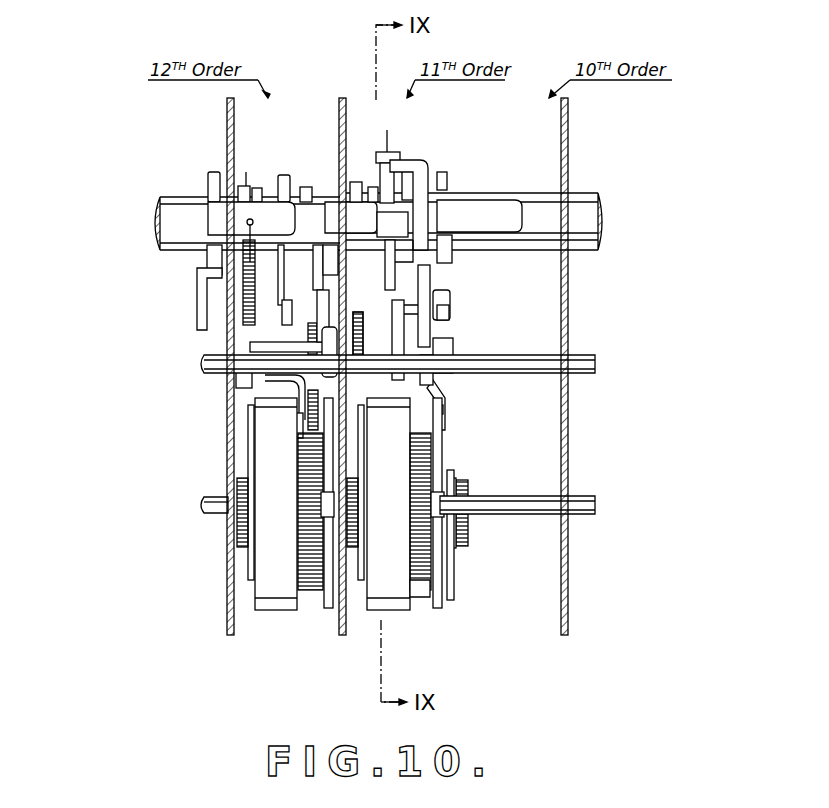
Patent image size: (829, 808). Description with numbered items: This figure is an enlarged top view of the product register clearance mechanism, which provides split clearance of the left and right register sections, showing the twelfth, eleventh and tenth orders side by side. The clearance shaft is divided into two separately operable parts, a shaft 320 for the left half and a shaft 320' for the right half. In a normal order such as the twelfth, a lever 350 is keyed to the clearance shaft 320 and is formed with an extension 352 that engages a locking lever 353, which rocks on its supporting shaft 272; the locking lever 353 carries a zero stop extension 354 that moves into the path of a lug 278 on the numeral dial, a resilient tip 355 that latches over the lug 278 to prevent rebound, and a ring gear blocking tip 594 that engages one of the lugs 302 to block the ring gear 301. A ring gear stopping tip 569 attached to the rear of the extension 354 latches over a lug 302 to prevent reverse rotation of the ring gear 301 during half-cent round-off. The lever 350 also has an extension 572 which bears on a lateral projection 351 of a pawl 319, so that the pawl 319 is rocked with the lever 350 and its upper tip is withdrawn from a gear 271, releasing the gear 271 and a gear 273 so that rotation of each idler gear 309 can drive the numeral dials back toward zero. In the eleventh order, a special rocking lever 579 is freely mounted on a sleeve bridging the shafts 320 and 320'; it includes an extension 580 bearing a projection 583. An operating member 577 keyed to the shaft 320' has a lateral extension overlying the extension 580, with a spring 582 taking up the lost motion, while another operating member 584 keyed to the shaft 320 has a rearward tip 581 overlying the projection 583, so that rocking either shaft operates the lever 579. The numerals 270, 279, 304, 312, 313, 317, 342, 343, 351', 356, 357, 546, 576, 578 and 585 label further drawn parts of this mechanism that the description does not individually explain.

The shaft 270 is at (200, 505).
The gear 271 is at (300, 341).
The supporting shaft 272 is at (596, 363).
The gear 273 is at (420, 612).
The lug 278 is at (297, 432).
The numeral wheel 279 is at (282, 612).
The ring gear 301 is at (445, 578).
The lug 302 is at (330, 612).
The block 304 is at (446, 556).
The idler gear 309 is at (462, 546).
The pinion 312 is at (340, 438).
The member 313 is at (322, 397).
The bracket 317 is at (207, 278).
The pawl 319 is at (252, 335).
The clearance shaft 320 is at (218, 223).
The clearance shaft 320' is at (499, 221).
The post 342 is at (214, 172).
The pin 343 is at (258, 185).
The lever 350 is at (290, 160).
The lateral projection 351 is at (208, 202).
The bracket 351' is at (310, 161).
The extension 352 is at (300, 308).
The locking lever 353 is at (400, 312).
The zero stop extension 354 is at (238, 382).
The resilient tip 355 is at (305, 447).
The clip 356 is at (336, 268).
The bracket 357 is at (207, 297).
The block 546 is at (425, 378).
The ring gear stopping tip 569 is at (441, 410).
The extension 572 is at (282, 248).
The bracket 576 is at (385, 219).
The operating member 577 is at (428, 160).
The lever 578 is at (404, 163).
The special rocking lever 579 is at (400, 285).
The extension 580 is at (387, 150).
The rearward tip 581 is at (407, 167).
The spring 582 is at (392, 152).
The projection 583 is at (380, 170).
The operating member 584 is at (452, 258).
The block 585 is at (447, 180).
The ring gear blocking tip 594 is at (330, 398).